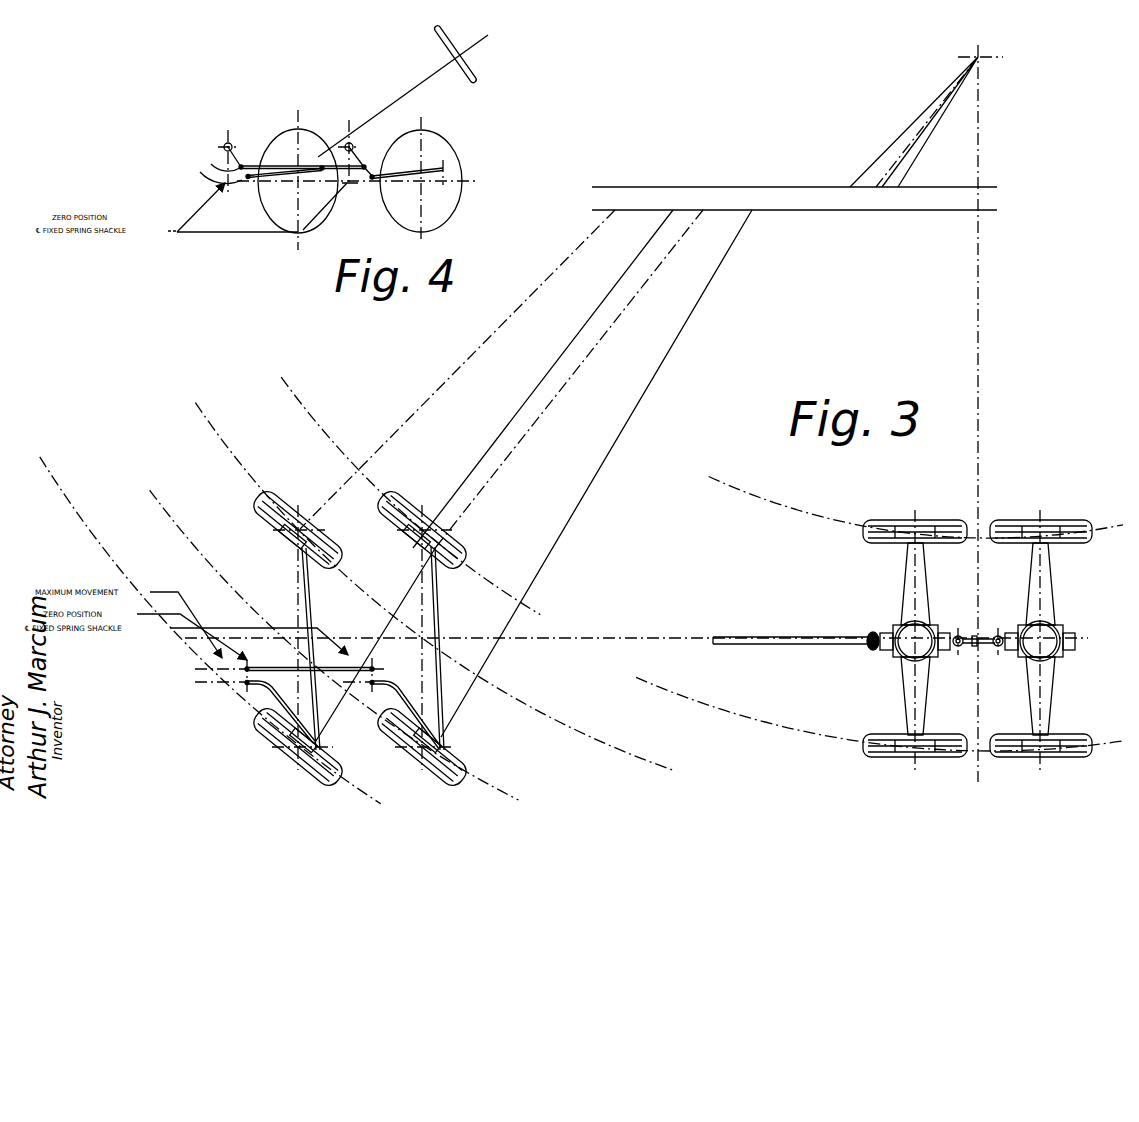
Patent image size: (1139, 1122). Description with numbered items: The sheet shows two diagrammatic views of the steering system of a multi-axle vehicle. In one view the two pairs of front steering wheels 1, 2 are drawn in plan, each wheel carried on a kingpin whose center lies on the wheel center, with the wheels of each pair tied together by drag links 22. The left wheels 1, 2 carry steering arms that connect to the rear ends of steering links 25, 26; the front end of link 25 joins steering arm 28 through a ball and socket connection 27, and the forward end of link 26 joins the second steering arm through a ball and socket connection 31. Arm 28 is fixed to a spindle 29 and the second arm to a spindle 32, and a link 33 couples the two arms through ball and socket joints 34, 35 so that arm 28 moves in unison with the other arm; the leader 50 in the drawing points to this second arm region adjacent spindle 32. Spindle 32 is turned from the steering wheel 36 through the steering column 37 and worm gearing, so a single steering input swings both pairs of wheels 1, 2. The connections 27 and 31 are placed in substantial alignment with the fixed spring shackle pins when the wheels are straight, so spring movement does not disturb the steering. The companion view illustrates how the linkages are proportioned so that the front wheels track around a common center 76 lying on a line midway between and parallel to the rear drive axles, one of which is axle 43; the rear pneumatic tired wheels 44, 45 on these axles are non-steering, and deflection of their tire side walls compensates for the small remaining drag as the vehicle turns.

In FIG. 3, the steering wheels 1 is at (272, 494).
In FIG. 3, the steering wheels 2 is at (404, 497).
In FIG. 3, the drag links 22 is at (311, 604).
In FIG. 4, the steering link 25 is at (257, 185).
In FIG. 3, the steering link 25 is at (253, 703).
In FIG. 4, the steering link 26 is at (397, 182).
In FIG. 3, the steering link 26 is at (400, 683).
In FIG. 4, the ball and socket connection 27 is at (231, 193).
In FIG. 4, the steering arm 28 is at (210, 160).
In FIG. 4, the spindle 29 is at (222, 143).
In FIG. 4, the ball and socket connection 31 is at (373, 182).
In FIG. 4, the spindle 32 is at (347, 143).
In FIG. 4, the link 33 is at (291, 166).
In FIG. 3, the link 33 is at (335, 664).
In FIG. 4, the ball and socket joint 34 is at (244, 162).
In FIG. 4, the ball and socket joint 35 is at (349, 190).
In FIG. 4, the steering wheel 36 is at (480, 78).
In FIG. 4, the steering column 37 is at (396, 100).
In FIG. 3, the drive axle 43 is at (905, 580).
In FIG. 3, the pneumatic tired wheels 44 is at (867, 520).
In FIG. 3, the pneumatic tired wheels 45 is at (1065, 522).
In FIG. 4, the link 50 is at (370, 164).
In FIG. 3, the pivot point 76 is at (983, 58).